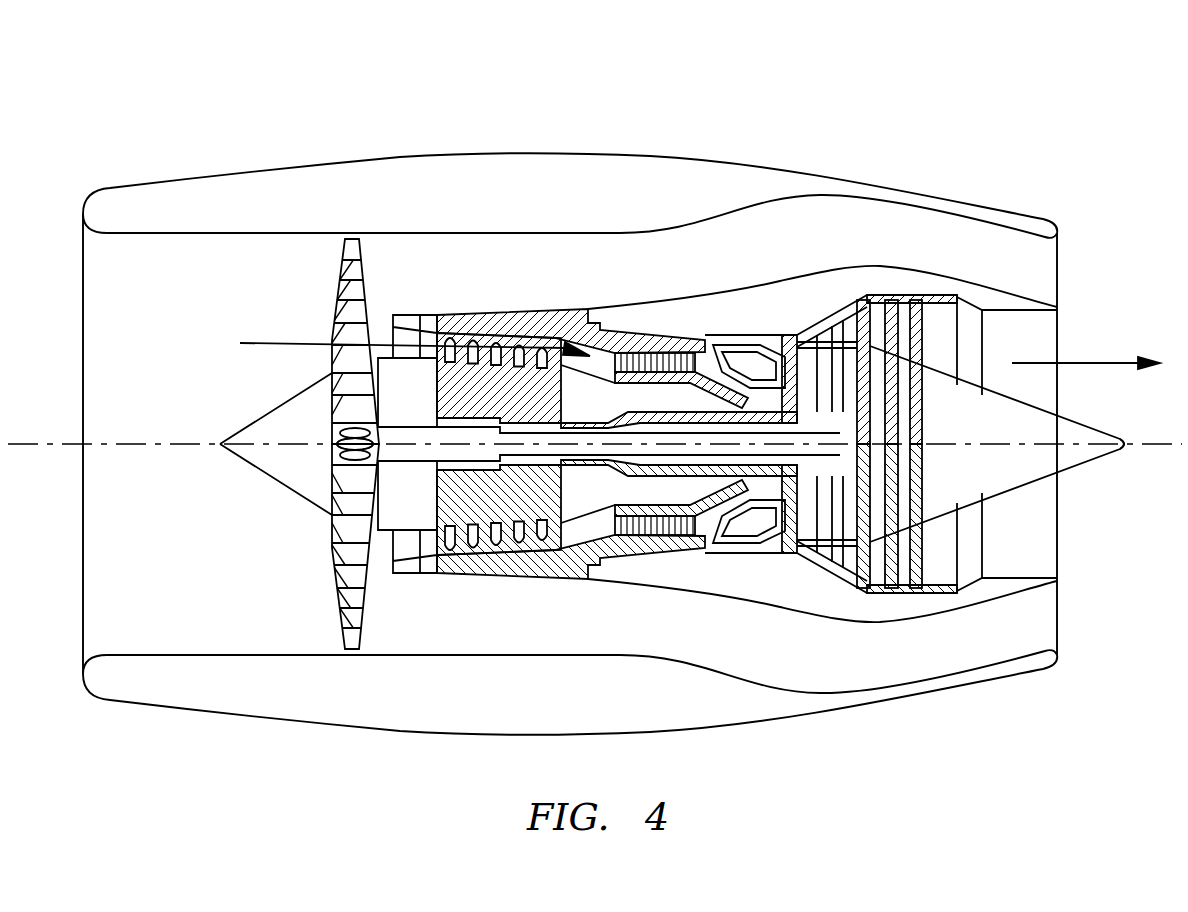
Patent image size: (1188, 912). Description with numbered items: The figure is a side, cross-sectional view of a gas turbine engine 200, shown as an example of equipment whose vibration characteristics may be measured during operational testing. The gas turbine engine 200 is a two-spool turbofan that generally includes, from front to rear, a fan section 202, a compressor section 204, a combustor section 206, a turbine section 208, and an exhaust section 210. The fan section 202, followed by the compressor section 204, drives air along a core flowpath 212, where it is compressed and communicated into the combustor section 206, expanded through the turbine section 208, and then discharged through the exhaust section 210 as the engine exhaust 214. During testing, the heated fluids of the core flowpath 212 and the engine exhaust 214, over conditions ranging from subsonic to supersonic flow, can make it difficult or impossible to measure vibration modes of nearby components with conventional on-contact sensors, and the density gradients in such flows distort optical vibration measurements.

The gas turbine engine 200 is at (80, 104).
The fan section 202 is at (218, 82).
The compressor section 204 is at (610, 82).
The combustor section 206 is at (785, 82).
The turbine section 208 is at (785, 82).
The exhaust section 210 is at (915, 82).
The core flowpath 212 is at (282, 343).
The engine exhaust 214 is at (1108, 363).